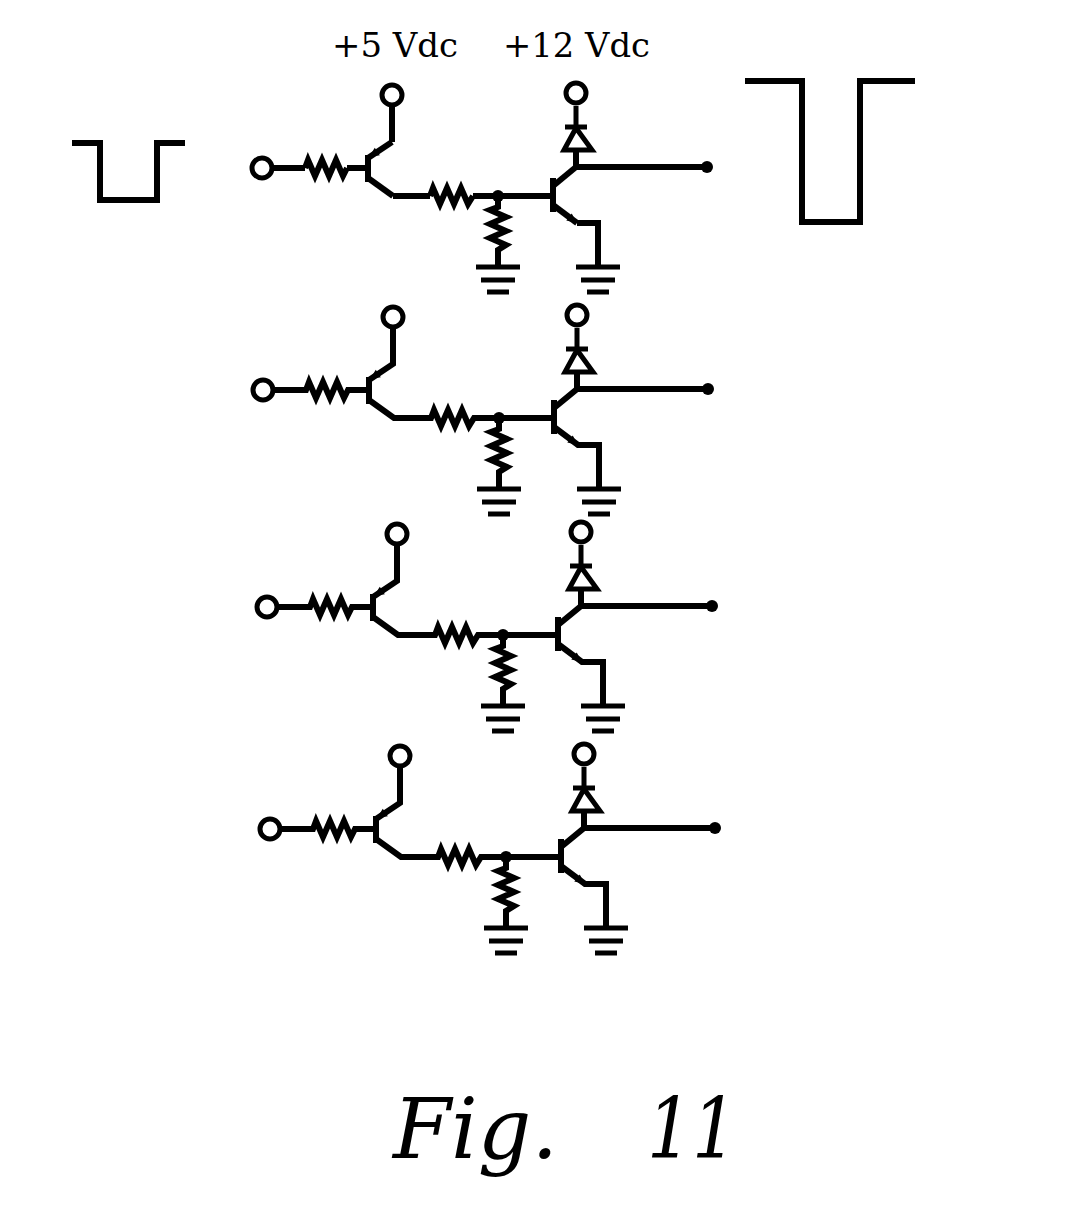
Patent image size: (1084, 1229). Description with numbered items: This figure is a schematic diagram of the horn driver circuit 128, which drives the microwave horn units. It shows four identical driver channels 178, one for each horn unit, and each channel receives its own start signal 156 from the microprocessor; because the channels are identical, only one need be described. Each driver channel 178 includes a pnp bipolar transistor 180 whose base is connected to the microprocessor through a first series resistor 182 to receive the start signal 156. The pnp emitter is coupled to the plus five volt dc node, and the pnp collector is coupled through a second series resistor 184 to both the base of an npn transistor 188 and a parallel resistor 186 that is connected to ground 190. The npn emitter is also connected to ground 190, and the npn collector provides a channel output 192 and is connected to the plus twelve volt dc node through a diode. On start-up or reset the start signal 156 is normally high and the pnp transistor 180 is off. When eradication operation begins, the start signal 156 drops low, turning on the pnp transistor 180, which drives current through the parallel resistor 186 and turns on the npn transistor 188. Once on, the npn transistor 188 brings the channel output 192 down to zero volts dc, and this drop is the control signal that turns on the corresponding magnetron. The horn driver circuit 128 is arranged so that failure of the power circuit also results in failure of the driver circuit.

The horn driver circuit 128 is at (197, 713).
The start signal 156 is at (123, 205).
The driver channel 178 is at (708, 308).
The pnp bipolar transistor 180 is at (364, 183).
The first series resistor 182 is at (307, 157).
The second series resistor 184 is at (448, 187).
The parallel resistor 186 is at (497, 242).
The npn transistor 188 is at (557, 197).
The ground 190 is at (503, 282).
The channel output 192 is at (708, 160).